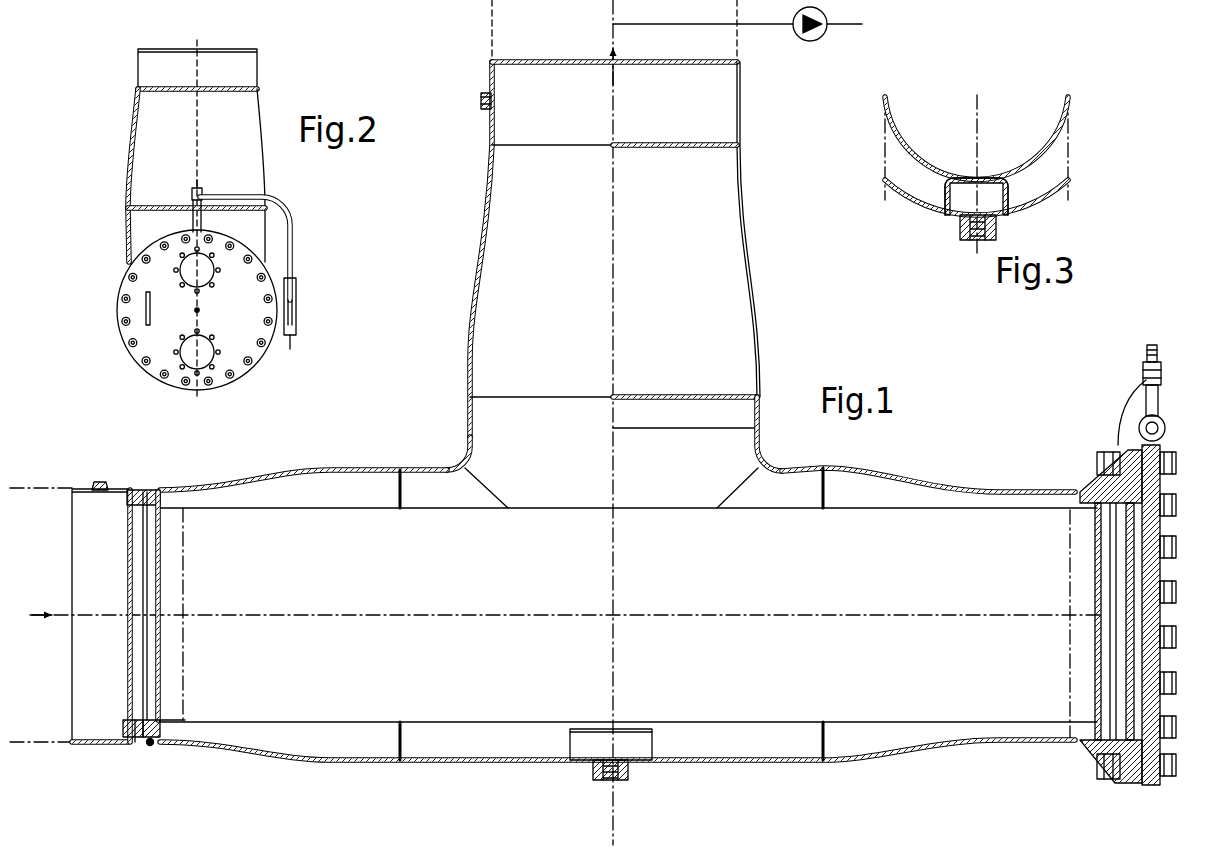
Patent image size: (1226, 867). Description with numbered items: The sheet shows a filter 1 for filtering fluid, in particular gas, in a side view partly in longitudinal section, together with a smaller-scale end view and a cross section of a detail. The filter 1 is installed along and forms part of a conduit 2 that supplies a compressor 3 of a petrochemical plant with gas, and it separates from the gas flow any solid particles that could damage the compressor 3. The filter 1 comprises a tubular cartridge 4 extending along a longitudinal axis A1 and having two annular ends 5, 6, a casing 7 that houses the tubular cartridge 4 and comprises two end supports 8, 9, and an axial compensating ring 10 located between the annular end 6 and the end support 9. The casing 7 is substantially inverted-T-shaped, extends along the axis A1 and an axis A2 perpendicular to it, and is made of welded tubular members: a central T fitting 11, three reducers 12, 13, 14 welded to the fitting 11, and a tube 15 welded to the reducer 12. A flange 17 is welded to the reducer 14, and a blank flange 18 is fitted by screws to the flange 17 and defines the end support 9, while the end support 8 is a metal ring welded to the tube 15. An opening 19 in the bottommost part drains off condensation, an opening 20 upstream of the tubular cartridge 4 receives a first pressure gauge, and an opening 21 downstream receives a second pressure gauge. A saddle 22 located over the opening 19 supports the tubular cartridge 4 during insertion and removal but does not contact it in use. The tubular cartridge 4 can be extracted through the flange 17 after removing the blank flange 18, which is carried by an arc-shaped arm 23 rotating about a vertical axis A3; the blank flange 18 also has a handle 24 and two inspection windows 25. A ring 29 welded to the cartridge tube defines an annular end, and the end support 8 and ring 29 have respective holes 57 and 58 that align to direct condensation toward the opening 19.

In FIG. 1, the filter 1 is at (828, 360).
In FIG. 2, the filter 1 is at (122, 115).
In FIG. 1, the conduit 2 is at (783, 32).
In FIG. 1, the compressor 3 is at (810, 42).
In FIG. 1, the tubular cartridge 4 is at (645, 496).
In FIG. 3, the tubular cartridge 4 is at (1074, 113).
In FIG. 1, the annular end 5 is at (162, 492).
In FIG. 1, the annular end 6 is at (1080, 500).
In FIG. 1, the casing 7 is at (780, 376).
In FIG. 2, the casing 7 is at (120, 149).
In FIG. 3, the casing 7 is at (1064, 207).
In FIG. 1, the end support 8 is at (136, 715).
In FIG. 1, the end support 9 is at (1146, 504).
In FIG. 1, the axial compensating ring 10 is at (1108, 722).
In FIG. 1, the central T fitting 11 is at (455, 455).
In FIG. 2, the central T fitting 11 is at (138, 230).
In FIG. 1, the reducer 12 is at (318, 468).
In FIG. 1, the reducer 13 is at (470, 318).
In FIG. 2, the reducer 13 is at (250, 178).
In FIG. 1, the reducer 14 is at (930, 482).
In FIG. 1, the tube 15 is at (130, 490).
In FIG. 1, the flange 17 is at (1120, 790).
In FIG. 1, the blank flange 18 is at (1146, 790).
In FIG. 2, the blank flange 18 is at (244, 382).
In FIG. 1, the opening 19 is at (618, 782).
In FIG. 3, the opening 19 is at (967, 246).
In FIG. 1, the opening 20 is at (100, 480).
In FIG. 1, the opening 21 is at (480, 100).
In FIG. 1, the saddle 22 is at (652, 742).
In FIG. 3, the saddle 22 is at (1012, 192).
In FIG. 2, the arc-shaped arm 23 is at (290, 252).
In FIG. 2, the handle 24 is at (145, 310).
In FIG. 2, the inspection windows 25 is at (190, 272).
In FIG. 1, the ring 29 is at (155, 745).
In FIG. 1, the hole 57 is at (124, 730).
In FIG. 1, the hole 58 is at (162, 728).
In FIG. 1, the longitudinal axis A1 is at (458, 612).
In FIG. 1, the axis A2 is at (624, 310).
In FIG. 3, the axis A2 is at (984, 146).
In FIG. 2, the vertical axis A3 is at (290, 340).